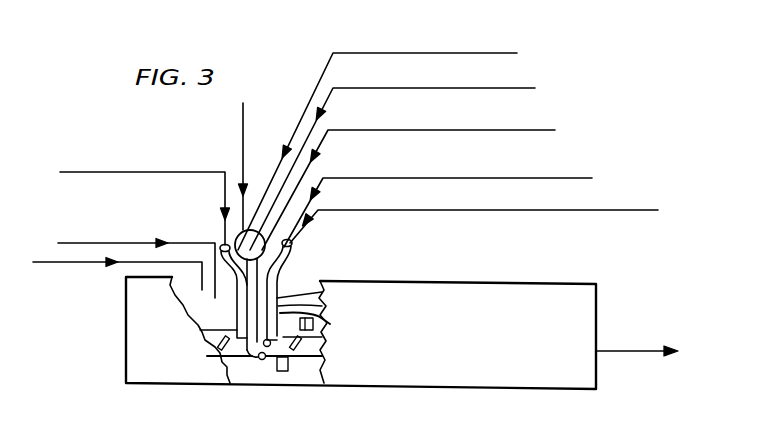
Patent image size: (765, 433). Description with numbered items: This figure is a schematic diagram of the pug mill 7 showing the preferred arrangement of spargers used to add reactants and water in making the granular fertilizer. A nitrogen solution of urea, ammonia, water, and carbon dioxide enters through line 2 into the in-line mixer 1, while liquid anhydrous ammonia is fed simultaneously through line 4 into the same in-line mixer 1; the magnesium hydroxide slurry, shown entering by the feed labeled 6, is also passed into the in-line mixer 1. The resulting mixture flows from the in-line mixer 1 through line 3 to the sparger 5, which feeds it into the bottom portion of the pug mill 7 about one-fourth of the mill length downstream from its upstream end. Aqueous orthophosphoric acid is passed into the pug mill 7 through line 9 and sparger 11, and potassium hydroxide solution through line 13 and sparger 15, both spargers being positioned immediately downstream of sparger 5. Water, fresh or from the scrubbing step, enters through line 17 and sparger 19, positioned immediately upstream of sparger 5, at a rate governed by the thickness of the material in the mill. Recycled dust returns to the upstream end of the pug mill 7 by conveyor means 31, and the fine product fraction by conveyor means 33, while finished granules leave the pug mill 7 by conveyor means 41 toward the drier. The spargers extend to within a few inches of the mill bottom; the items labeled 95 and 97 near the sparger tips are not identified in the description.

The in-line mixer 1 is at (245, 113).
The line 2 is at (485, 53).
The line 3 is at (292, 250).
The line 4 is at (495, 88).
The sparger 5 is at (283, 290).
The magnesium hydroxide slurry feed line 6 is at (529, 130).
The pug mill 7 is at (557, 298).
The line 9 is at (548, 178).
The sparger 11 is at (324, 292).
The line 13 is at (631, 210).
The sparger 15 is at (322, 315).
The line 17 is at (100, 172).
The sparger 19 is at (236, 309).
The conveyor means 31 is at (192, 243).
The conveyor means 33 is at (42, 259).
The conveyor means 41 is at (628, 350).
The layer 95 is at (322, 342).
The wedges 97 is at (292, 350).